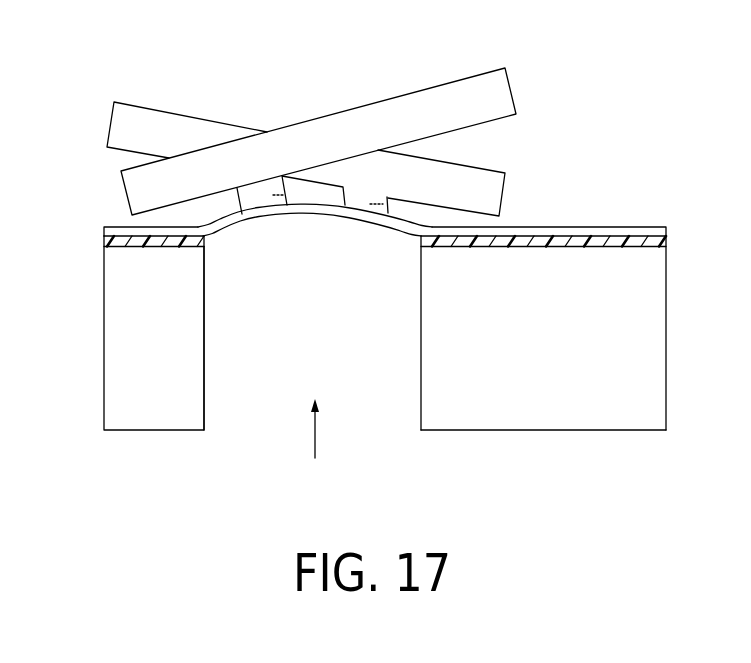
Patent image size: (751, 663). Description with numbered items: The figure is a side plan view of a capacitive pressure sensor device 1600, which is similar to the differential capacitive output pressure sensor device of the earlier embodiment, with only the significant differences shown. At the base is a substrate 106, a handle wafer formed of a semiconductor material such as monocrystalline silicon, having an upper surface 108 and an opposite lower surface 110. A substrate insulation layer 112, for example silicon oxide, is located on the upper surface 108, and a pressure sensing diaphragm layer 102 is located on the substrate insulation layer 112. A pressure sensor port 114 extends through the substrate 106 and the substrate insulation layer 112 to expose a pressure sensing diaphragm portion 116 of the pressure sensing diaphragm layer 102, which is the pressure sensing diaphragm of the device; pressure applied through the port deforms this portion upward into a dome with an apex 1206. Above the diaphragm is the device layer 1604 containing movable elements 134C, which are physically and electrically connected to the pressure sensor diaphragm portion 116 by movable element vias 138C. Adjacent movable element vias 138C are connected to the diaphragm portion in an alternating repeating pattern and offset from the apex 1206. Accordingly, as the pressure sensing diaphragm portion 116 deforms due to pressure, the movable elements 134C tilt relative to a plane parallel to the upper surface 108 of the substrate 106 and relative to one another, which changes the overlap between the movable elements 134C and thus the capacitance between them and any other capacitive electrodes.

The capacitive pressure sensor device 1600 is at (663, 172).
The device layer 1604 is at (549, 143).
The movable elements 134C is at (168, 122).
The movable element vias 138C is at (287, 192).
The pressure sensing diaphragm layer 102 is at (679, 229).
The pressure sensing diaphragm portion 116 is at (276, 228).
The apex 1206 is at (334, 218).
The substrate insulation layer 112 is at (679, 243).
The upper surface 108 is at (599, 247).
The substrate 106 is at (558, 359).
The lower surface 110 is at (597, 429).
The pressure sensor port 114 is at (313, 360).